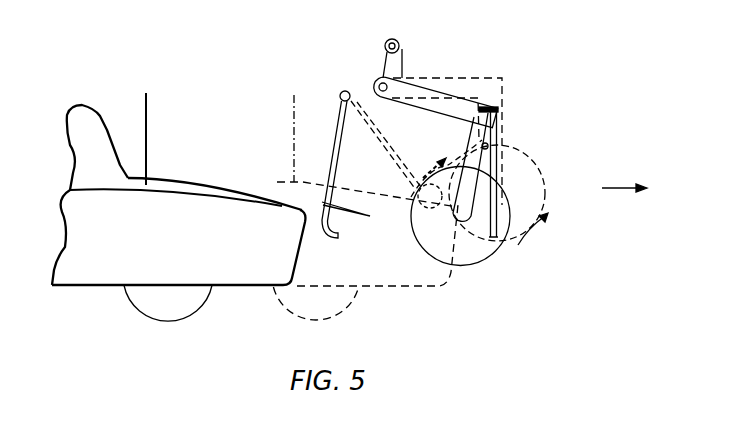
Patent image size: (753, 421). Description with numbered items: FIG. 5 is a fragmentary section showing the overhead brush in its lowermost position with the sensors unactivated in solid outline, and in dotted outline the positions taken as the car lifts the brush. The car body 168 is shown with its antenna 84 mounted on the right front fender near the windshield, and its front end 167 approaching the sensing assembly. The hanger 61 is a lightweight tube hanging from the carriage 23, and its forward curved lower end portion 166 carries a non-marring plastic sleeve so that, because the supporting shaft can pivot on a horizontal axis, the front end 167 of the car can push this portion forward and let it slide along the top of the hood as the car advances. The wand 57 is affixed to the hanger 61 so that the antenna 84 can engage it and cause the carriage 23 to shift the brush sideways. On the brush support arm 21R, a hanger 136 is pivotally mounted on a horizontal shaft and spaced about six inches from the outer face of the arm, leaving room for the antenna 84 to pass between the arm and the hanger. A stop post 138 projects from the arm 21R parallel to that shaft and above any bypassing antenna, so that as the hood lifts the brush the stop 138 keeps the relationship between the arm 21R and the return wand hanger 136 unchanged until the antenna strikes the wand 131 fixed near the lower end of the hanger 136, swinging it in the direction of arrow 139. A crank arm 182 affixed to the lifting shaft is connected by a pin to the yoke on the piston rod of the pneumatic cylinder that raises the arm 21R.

The seat body 168 is at (213, 187).
The front end of the car 167 is at (310, 218).
The lower end portion of the tube 166 is at (340, 237).
The hanger 61 is at (338, 158).
The antenna 84 is at (294, 118).
The wand 57 is at (427, 169).
The crank arm 182 is at (400, 41).
The brush support arm 21R is at (378, 80).
The stop post 138 is at (483, 146).
The hanger 136 is at (493, 168).
The wand 131 is at (477, 235).
The arrow 139 is at (533, 233).
The carriage 23 is at (636, 184).